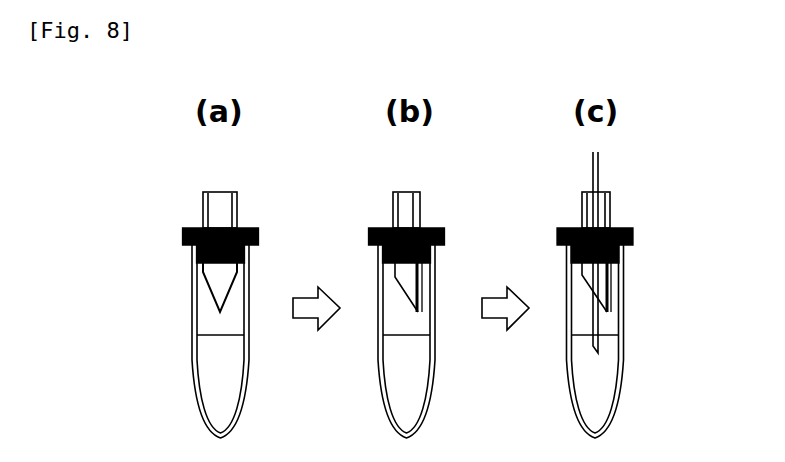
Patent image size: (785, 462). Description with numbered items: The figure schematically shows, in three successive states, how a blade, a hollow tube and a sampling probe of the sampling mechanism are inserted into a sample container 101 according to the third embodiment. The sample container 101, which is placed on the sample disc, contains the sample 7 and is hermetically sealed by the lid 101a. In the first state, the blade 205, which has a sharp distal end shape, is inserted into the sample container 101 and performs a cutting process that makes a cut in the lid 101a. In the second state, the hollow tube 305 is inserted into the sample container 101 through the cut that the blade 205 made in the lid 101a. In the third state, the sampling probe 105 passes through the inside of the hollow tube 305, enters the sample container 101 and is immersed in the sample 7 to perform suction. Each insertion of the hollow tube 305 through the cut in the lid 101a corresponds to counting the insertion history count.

The sample 7 is at (205, 403).
The sample container 101 is at (172, 330).
The lid 101a is at (183, 235).
The sampling probe 105 is at (600, 180).
The blade 205 is at (213, 200).
The hollow tube 305 is at (420, 203).